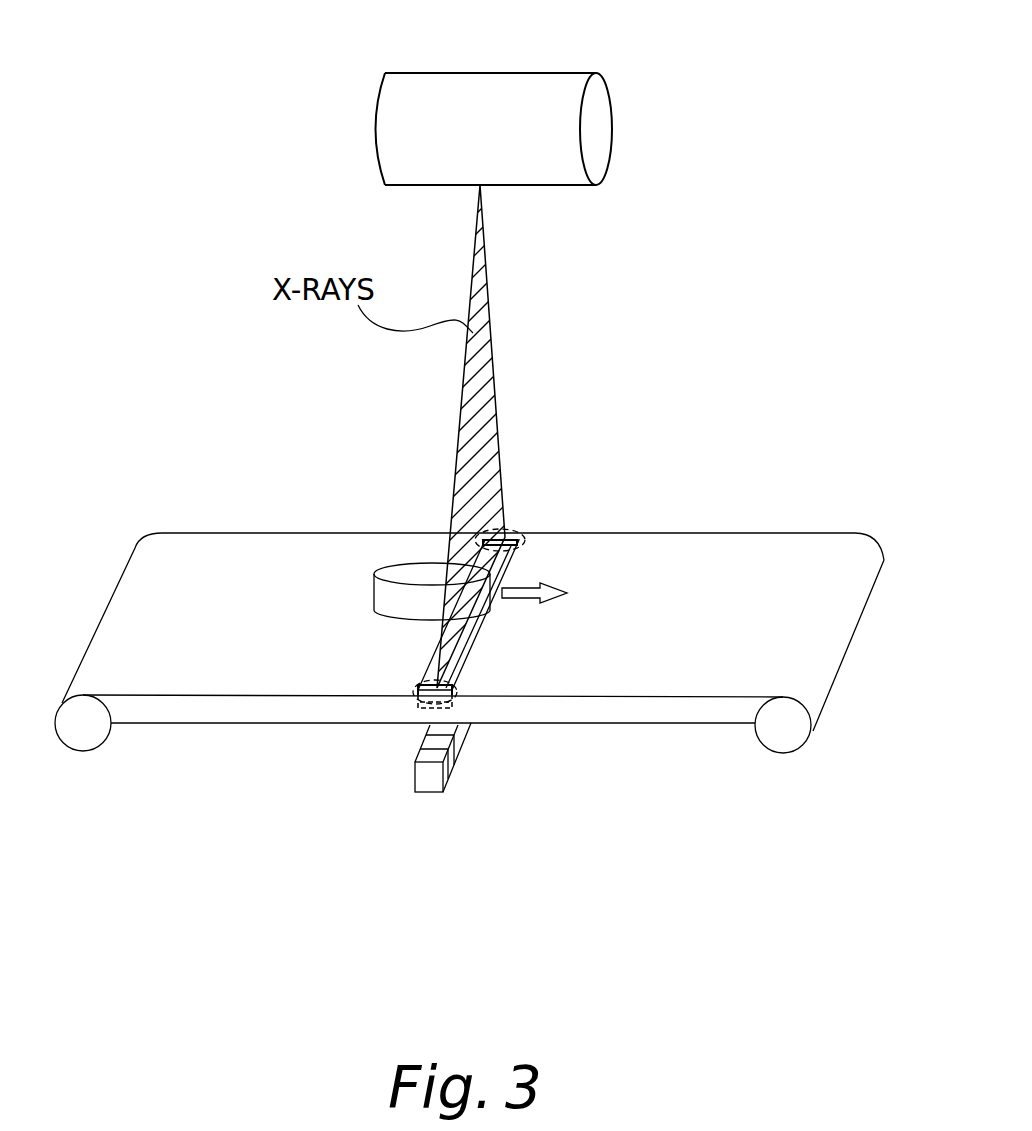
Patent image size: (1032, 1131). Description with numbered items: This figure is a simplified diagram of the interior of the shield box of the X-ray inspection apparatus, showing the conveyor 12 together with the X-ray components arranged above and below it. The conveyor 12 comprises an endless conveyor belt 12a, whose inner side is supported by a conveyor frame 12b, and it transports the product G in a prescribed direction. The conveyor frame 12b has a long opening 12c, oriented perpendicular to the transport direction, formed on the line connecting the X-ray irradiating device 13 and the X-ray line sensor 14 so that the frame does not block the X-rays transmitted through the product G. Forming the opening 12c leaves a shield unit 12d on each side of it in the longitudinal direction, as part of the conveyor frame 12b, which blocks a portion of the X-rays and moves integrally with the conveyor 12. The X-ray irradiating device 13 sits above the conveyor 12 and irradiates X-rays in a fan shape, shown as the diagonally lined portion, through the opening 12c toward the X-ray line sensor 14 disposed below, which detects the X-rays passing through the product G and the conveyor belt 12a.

The conveyor 12 is at (768, 485).
The conveyor belt 12a is at (663, 552).
The conveyor frame 12b is at (617, 714).
The opening 12c is at (483, 630).
The shield unit 12d is at (505, 530).
The X-ray irradiating device 13 is at (547, 85).
The X-ray line sensor 14 is at (432, 806).
The product G is at (400, 580).